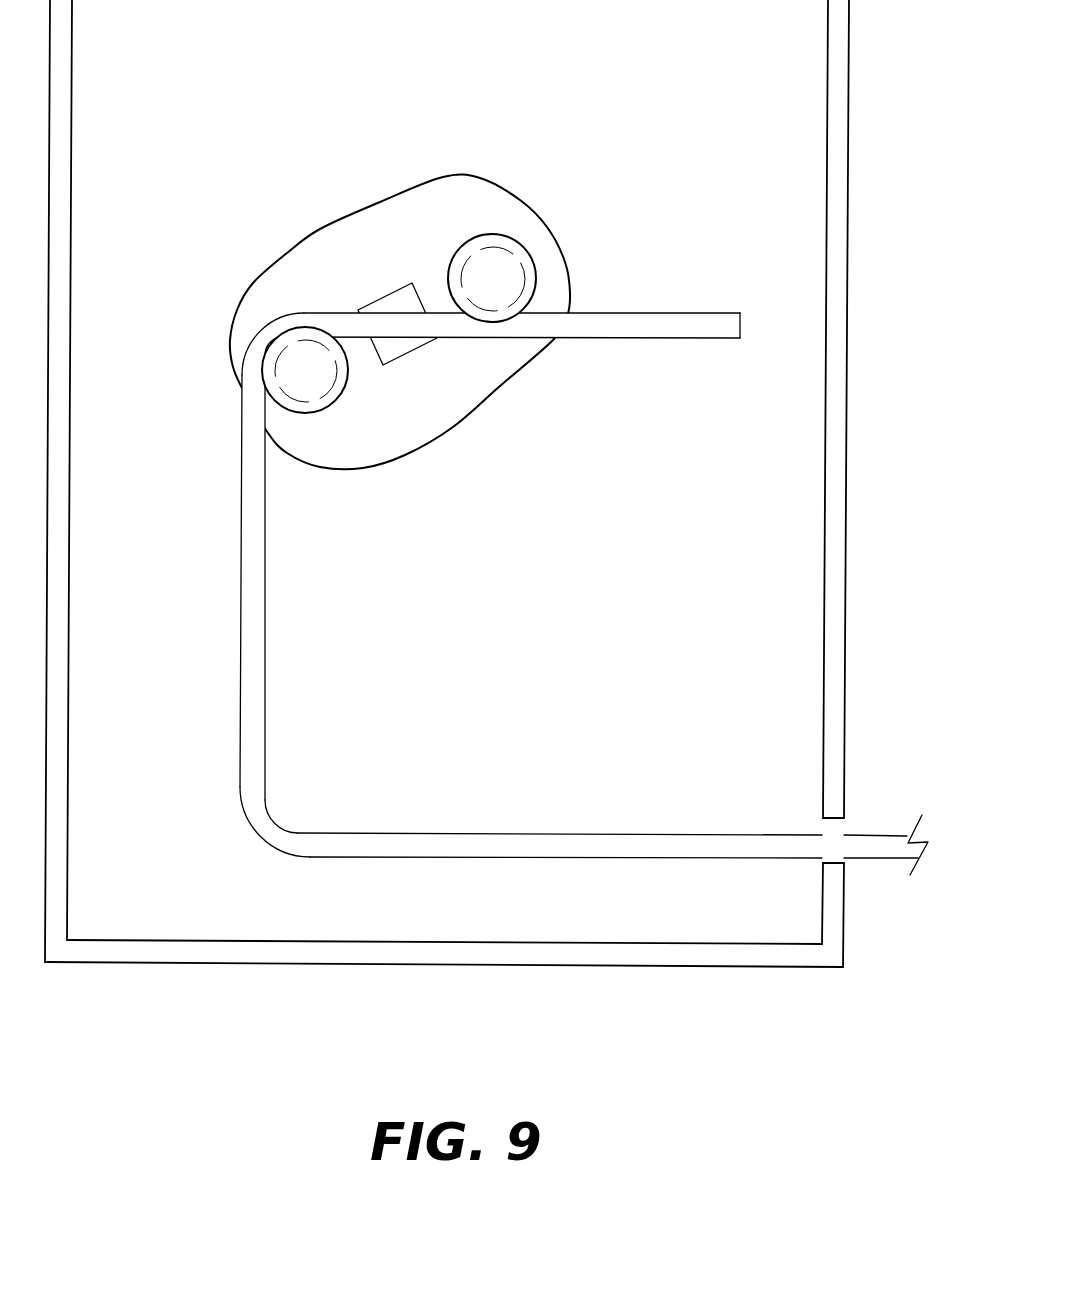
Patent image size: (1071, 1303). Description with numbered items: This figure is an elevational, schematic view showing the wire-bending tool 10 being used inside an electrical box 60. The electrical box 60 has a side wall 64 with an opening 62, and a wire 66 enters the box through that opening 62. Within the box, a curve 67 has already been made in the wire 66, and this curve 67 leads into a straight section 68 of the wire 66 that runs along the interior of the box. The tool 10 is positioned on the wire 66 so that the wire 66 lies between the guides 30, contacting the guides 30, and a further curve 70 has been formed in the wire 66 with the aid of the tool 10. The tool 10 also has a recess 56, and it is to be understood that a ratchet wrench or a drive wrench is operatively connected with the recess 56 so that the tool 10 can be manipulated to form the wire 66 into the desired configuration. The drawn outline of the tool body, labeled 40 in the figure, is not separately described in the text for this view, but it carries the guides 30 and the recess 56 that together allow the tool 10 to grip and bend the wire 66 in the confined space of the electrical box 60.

The tool 10 is at (427, 269).
The guides 30 is at (522, 240).
The clamp body 40 is at (318, 222).
The recess 56 is at (393, 343).
The electrical box 60 is at (447, 483).
The opening 62 is at (820, 862).
The side wall 64 is at (830, 488).
The wire 66 is at (512, 547).
The curve 67 is at (278, 813).
The straight section 68 is at (250, 716).
The curve 70 is at (267, 333).